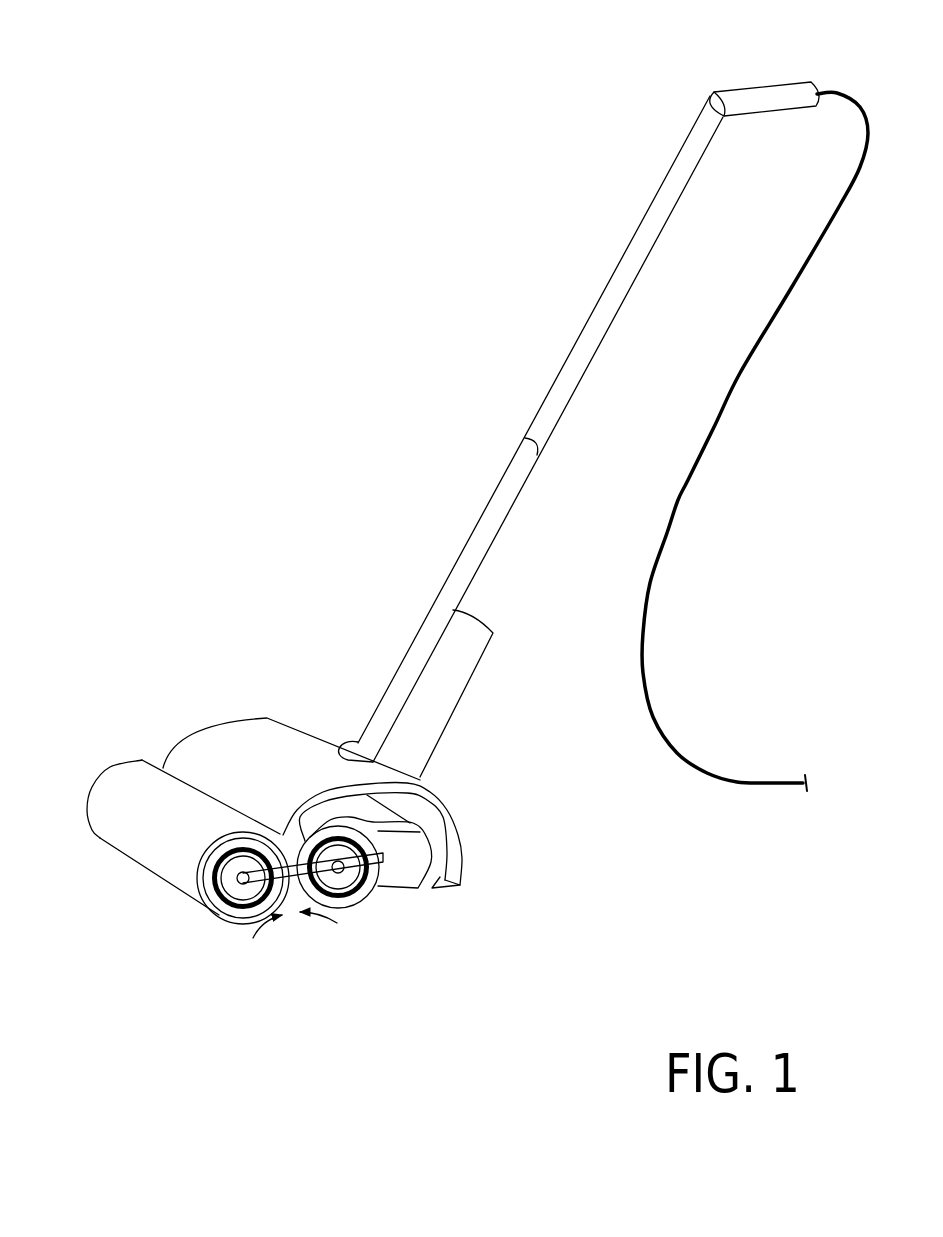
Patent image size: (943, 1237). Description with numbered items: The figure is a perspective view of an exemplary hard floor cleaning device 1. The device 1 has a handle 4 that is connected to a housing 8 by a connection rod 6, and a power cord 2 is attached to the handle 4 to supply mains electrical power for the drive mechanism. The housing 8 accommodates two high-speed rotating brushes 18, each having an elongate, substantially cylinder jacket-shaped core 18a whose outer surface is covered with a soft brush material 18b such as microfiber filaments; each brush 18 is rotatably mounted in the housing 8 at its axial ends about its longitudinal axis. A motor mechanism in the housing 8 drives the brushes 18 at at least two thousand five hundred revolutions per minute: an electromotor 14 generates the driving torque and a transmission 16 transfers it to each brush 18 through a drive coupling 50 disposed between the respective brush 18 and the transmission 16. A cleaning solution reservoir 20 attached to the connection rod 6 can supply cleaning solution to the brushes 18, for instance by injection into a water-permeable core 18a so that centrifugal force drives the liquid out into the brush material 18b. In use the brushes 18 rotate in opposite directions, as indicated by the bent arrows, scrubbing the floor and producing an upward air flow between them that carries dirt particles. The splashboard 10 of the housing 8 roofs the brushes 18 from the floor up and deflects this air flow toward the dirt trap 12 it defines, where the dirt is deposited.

The hard floor cleaning device 1 is at (247, 483).
The power cord 2 is at (667, 535).
The handle 4 is at (760, 100).
The connection rod 6 is at (483, 537).
The housing 8 is at (213, 715).
The splashboard 10 is at (160, 853).
The dirt trap 12 is at (447, 842).
The electromotor 14 is at (373, 862).
The transmission 16 is at (403, 880).
The brush 18 is at (235, 897).
The core 18a is at (215, 893).
The brush material 18b is at (217, 908).
The cleaning solution reservoir 20 is at (435, 705).
The drive coupling 50 is at (240, 889).